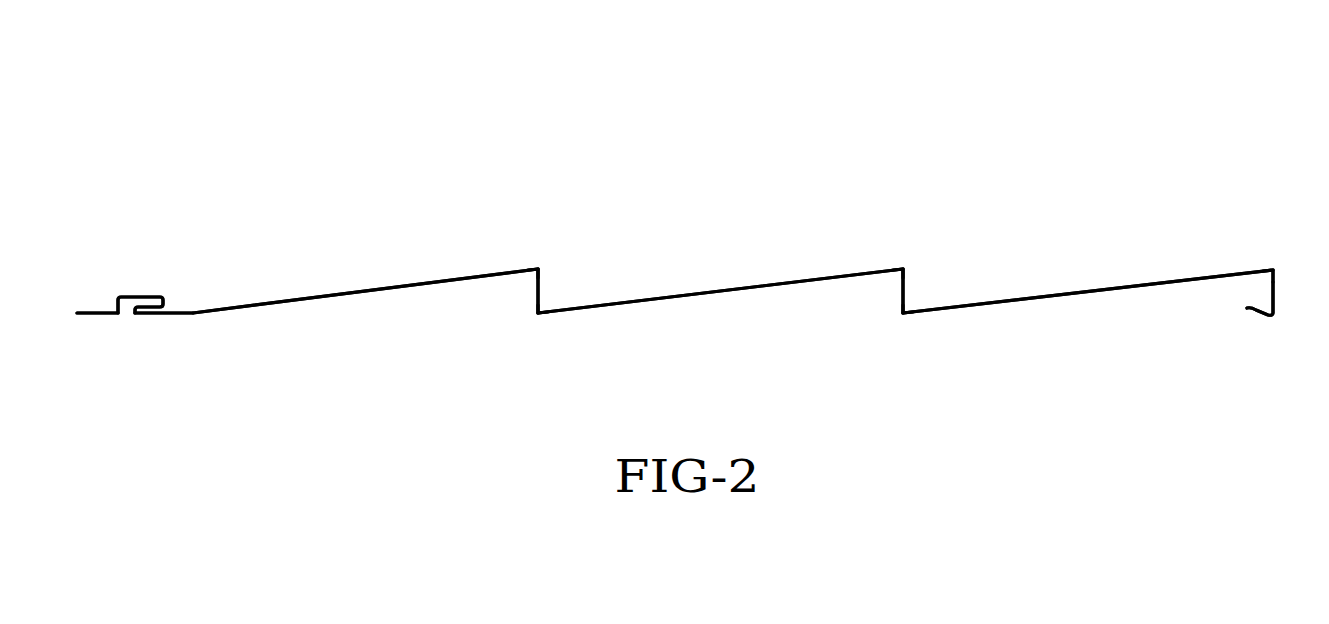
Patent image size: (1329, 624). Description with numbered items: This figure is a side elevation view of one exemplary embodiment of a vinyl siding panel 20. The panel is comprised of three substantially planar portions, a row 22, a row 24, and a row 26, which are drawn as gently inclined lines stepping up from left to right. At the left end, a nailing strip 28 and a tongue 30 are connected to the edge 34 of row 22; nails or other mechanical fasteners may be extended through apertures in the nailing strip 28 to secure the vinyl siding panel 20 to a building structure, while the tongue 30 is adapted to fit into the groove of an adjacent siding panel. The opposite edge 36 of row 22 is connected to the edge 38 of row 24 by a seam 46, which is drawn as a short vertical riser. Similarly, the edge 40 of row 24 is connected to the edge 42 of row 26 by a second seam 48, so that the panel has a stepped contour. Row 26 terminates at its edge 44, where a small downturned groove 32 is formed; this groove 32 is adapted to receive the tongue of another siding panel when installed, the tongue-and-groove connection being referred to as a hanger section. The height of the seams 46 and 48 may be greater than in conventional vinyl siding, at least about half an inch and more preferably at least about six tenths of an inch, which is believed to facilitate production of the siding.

The vinyl siding panel 20 is at (304, 122).
The row 22 is at (338, 297).
The row 24 is at (747, 290).
The row 26 is at (1117, 290).
The nailing strip 28 is at (93, 315).
The tongue 30 is at (142, 297).
The groove 32 is at (1277, 293).
The edge 34 is at (160, 315).
The edge 36 is at (540, 268).
The edge 38 is at (541, 308).
The edge 40 is at (906, 268).
The edge 42 is at (906, 308).
The edge 44 is at (1274, 270).
The seam 46 is at (533, 293).
The seam 48 is at (899, 293).